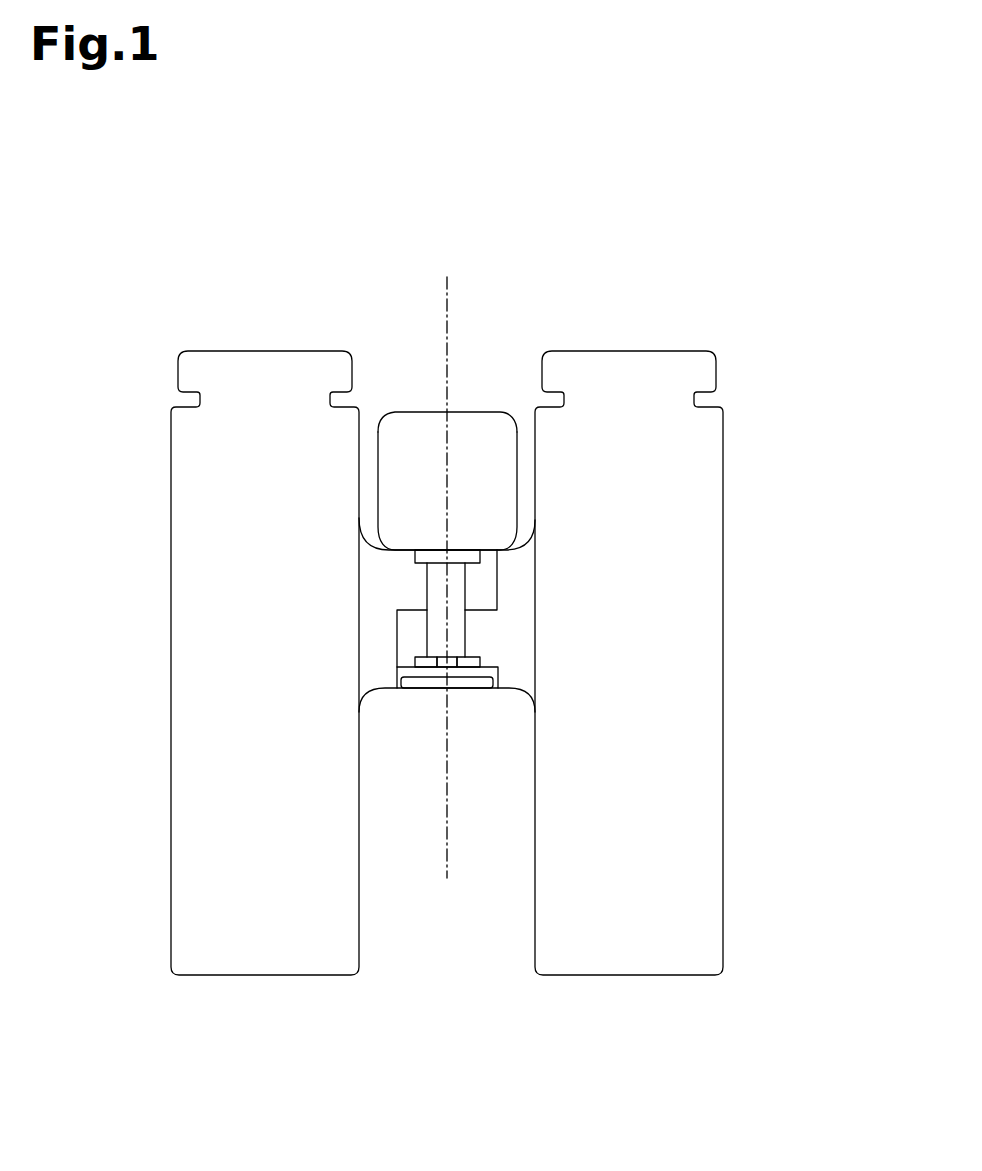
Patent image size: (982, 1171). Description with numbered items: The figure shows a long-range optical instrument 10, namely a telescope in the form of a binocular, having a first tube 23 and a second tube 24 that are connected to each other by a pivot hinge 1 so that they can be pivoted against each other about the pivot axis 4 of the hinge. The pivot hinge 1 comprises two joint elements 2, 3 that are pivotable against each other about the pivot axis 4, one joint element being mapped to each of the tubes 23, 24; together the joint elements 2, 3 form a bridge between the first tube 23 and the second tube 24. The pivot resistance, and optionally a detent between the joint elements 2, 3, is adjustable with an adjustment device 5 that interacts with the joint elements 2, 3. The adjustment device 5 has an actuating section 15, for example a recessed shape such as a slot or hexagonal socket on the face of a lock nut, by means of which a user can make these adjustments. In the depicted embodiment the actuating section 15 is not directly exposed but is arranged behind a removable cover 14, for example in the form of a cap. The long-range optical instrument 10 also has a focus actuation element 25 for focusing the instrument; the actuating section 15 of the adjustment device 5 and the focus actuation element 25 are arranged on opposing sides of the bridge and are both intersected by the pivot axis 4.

The long-range optical instrument 10 is at (705, 224).
The pivot hinge 1 is at (528, 532).
The joint element 2 is at (383, 548).
The joint element 3 is at (517, 690).
The pivot axis 4 is at (451, 284).
The adjustment device 5 is at (393, 585).
The cover 14 is at (417, 690).
The actuating section 15 is at (452, 670).
The first tube 23 is at (171, 633).
The second tube 24 is at (723, 621).
The focus actuation element 25 is at (513, 433).